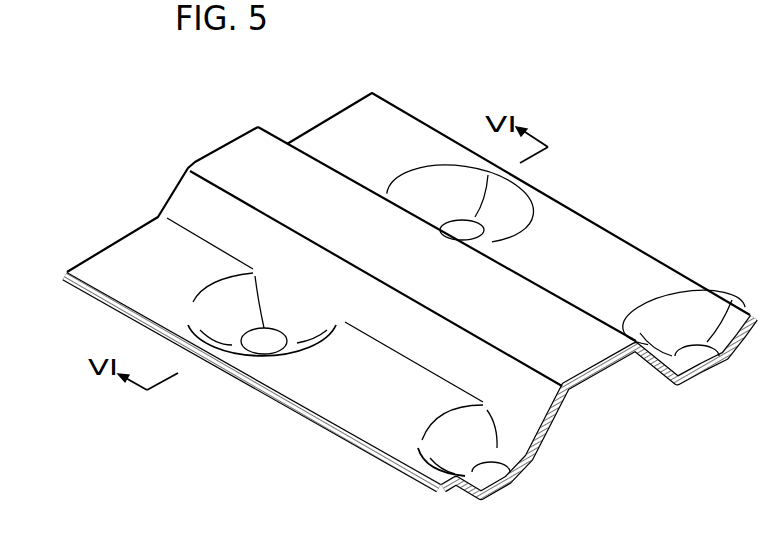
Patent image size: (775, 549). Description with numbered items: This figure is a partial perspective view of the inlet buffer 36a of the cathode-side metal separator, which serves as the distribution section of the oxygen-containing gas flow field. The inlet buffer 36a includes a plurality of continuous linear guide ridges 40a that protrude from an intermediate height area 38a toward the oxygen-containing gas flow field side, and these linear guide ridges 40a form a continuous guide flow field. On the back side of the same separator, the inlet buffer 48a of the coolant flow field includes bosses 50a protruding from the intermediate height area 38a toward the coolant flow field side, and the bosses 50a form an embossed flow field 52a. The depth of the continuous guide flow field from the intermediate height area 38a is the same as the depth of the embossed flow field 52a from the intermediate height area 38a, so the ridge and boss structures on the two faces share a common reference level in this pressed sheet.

The inlet buffer 36a is at (608, 277).
The intermediate height area 38a is at (120, 263).
The linear guide ridge 40a is at (232, 163).
The inlet buffer 48a is at (547, 442).
The boss 50a is at (193, 305).
The embossed flow field 52a is at (358, 418).